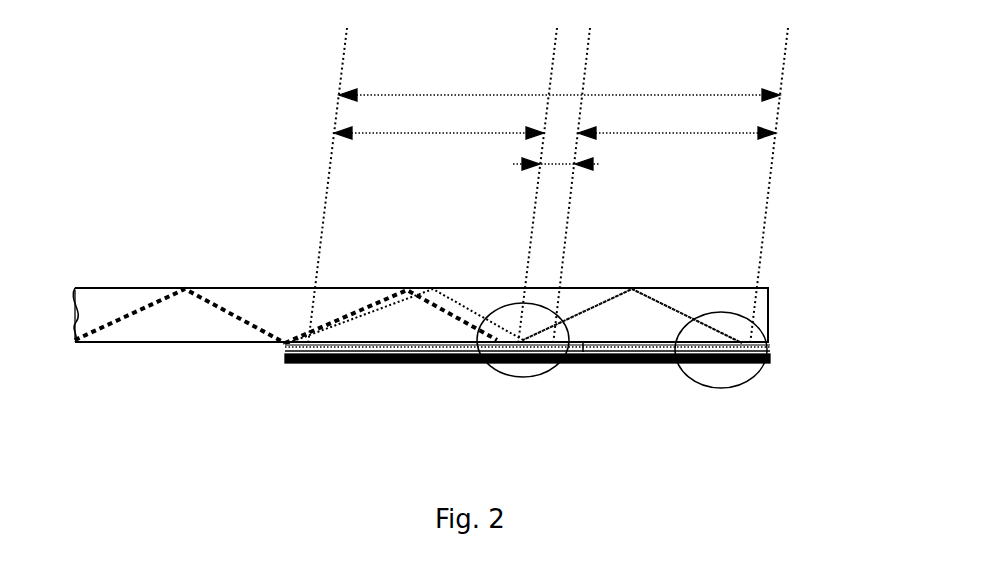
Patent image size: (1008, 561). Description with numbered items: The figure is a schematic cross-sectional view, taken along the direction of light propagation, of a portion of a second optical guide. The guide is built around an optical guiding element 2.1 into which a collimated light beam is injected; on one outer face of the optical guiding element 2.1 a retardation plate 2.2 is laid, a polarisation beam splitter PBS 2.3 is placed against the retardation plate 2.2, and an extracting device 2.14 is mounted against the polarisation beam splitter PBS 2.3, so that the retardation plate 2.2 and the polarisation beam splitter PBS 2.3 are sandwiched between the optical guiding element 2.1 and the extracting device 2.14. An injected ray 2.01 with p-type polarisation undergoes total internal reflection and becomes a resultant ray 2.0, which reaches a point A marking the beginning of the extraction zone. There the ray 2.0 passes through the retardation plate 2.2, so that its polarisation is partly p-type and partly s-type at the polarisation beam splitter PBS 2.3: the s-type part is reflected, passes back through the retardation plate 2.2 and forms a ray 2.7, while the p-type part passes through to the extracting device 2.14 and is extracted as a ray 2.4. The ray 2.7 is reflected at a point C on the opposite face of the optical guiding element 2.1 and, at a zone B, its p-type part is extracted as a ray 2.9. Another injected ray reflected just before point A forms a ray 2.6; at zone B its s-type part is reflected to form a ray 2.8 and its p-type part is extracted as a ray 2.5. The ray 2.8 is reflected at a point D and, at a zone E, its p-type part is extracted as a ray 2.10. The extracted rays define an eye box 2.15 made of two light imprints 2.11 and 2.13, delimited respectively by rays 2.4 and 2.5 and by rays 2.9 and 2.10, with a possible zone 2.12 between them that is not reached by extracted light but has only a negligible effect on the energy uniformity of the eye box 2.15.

The resultant ray 2.0 is at (207, 342).
The optical guiding element 2.1 is at (128, 342).
The injected ray 2.01 is at (158, 303).
The retardation plate 2.2 is at (768, 342).
The polarisation beam splitter PBS 2.3 is at (768, 352).
The ray 2.4 is at (342, 55).
The ray 2.5 is at (553, 55).
The ray 2.6 is at (365, 298).
The ray 2.7 is at (342, 365).
The ray 2.8 is at (593, 305).
The ray 2.9 is at (588, 60).
The ray 2.10 is at (785, 68).
The light imprint 2.11 is at (692, 135).
The zone not reached by the extracted light beam 2.12 is at (556, 166).
The light imprint 2.13 is at (432, 135).
The extracting device 2.14 is at (403, 365).
The eye box 2.15 is at (413, 95).
The point A is at (284, 344).
The zone B is at (510, 377).
The point C is at (433, 288).
The point D is at (633, 288).
The zone E is at (717, 388).